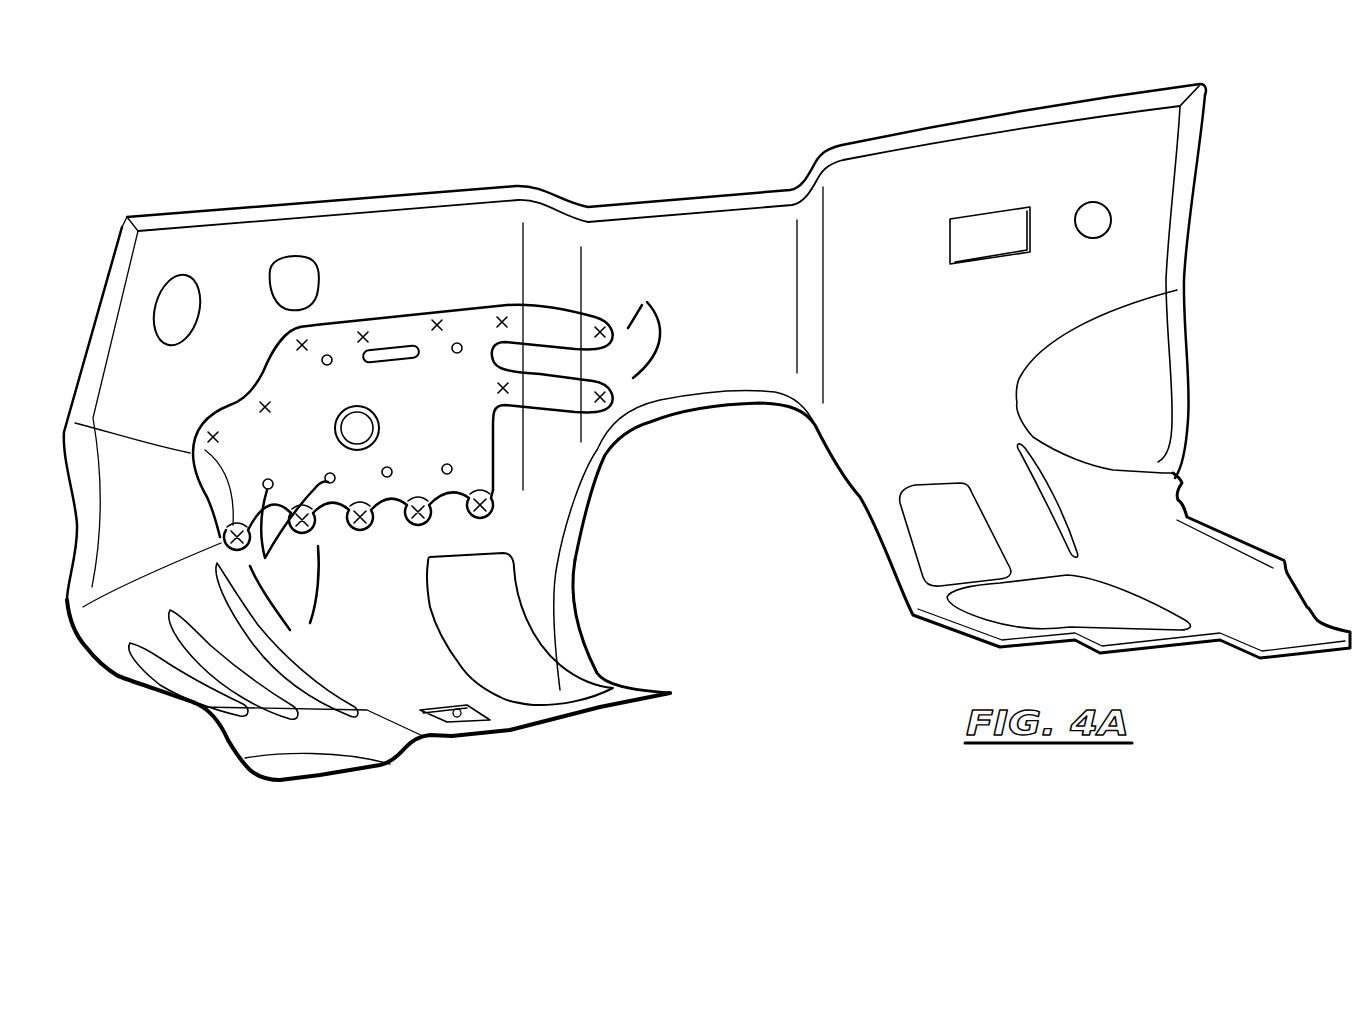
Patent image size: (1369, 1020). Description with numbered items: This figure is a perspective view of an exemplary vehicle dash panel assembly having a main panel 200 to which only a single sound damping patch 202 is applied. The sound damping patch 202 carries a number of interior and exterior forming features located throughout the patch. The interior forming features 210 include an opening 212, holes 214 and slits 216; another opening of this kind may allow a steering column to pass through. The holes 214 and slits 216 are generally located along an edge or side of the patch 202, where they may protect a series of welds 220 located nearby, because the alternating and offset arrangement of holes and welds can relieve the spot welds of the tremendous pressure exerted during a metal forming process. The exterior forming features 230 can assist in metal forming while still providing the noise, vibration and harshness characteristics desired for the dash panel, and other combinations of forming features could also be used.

The main panel 200 is at (330, 242).
The sound damping patch 202 is at (250, 418).
The interior forming features 210 is at (326, 355).
The opening 212 is at (392, 362).
The holes 214 is at (457, 343).
The slits 216 is at (410, 517).
The welds 220 is at (478, 513).
The exterior forming features 230 is at (459, 462).